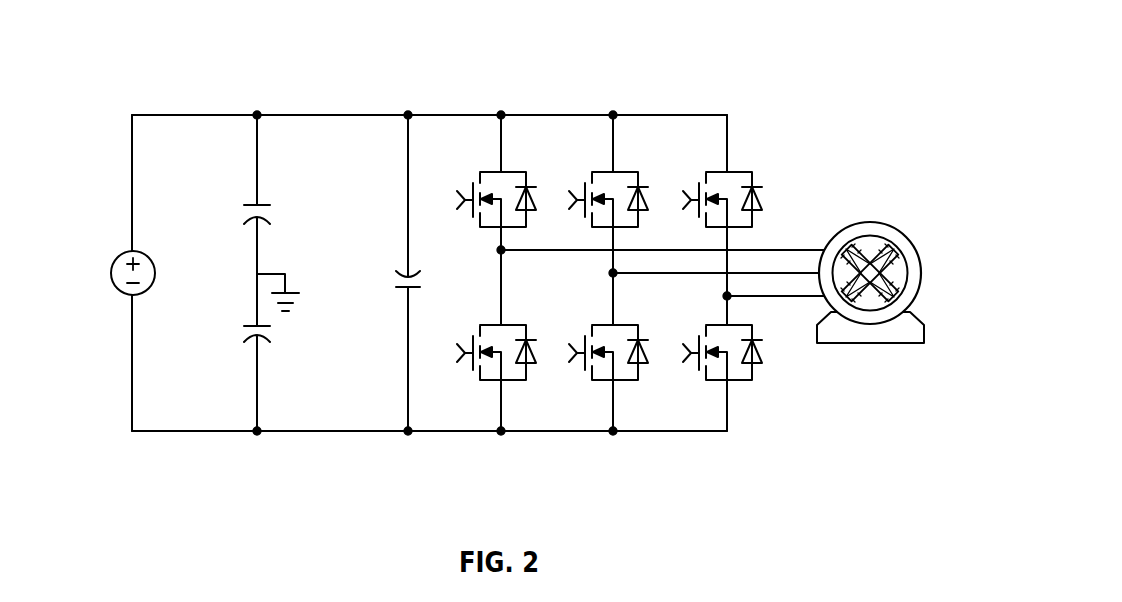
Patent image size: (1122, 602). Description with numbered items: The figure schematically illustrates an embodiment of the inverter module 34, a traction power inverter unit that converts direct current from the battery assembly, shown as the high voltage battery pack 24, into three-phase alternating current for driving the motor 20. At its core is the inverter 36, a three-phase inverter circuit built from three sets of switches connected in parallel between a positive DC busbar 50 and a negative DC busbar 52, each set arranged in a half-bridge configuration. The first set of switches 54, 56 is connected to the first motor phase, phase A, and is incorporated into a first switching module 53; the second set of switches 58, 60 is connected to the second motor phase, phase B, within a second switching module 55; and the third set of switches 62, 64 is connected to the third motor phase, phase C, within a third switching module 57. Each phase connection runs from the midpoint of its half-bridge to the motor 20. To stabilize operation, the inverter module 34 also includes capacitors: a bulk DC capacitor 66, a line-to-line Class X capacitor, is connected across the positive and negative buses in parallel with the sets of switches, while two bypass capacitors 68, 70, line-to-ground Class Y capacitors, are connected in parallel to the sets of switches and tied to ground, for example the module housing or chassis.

The motor 20 is at (903, 325).
The high voltage battery pack 24 is at (120, 262).
The inverter module 34 is at (120, 44).
The inverter 36 is at (640, 471).
The positive DC busbar 50 is at (360, 113).
The negative DC busbar 52 is at (337, 432).
The first switching module 53 is at (538, 100).
The second switching module 55 is at (630, 100).
The third switching module 57 is at (716, 100).
The switch of first set 54 is at (527, 184).
The switch of first set 56 is at (527, 337).
The switch of second set 58 is at (639, 184).
The switch of second set 60 is at (639, 337).
The switch of third set 62 is at (753, 184).
The switch of third set 64 is at (732, 383).
The bulk DC capacitor 66 is at (407, 275).
The bypass capacitor 68 is at (258, 206).
The bypass capacitor 70 is at (260, 338).